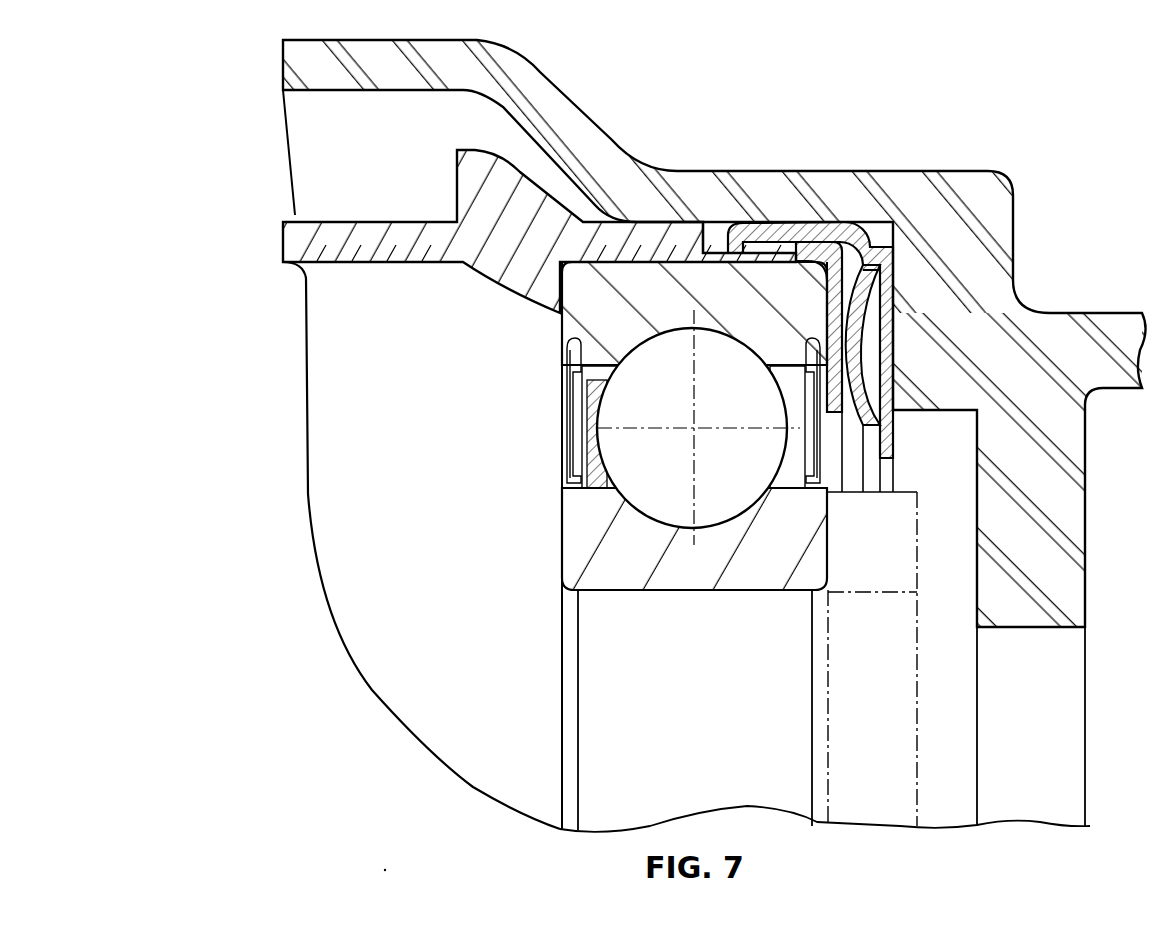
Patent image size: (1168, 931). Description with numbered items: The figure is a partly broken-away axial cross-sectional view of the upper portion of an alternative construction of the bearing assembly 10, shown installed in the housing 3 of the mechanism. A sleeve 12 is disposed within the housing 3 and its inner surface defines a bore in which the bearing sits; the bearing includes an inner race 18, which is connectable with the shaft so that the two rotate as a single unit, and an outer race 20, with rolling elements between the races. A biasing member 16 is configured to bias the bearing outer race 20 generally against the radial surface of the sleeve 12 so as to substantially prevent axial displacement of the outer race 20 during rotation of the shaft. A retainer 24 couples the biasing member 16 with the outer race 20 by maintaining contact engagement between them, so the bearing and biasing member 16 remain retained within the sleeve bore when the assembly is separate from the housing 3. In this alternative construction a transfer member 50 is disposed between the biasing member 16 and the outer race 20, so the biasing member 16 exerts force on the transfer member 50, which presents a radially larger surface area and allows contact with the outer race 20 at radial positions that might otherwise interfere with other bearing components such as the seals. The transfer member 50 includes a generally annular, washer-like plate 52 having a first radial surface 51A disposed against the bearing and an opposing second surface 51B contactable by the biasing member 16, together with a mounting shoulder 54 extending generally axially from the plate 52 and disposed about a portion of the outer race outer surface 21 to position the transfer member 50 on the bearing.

The housing 3 is at (625, 132).
The bearing assembly 10 is at (266, 364).
The sleeve 12 is at (340, 205).
The biasing member 16 is at (737, 423).
The inner race 18 is at (568, 545).
The outer race 20 is at (556, 324).
The outer race outer surface 21 is at (672, 263).
The retainer 24 is at (852, 213).
The transfer member 50 is at (878, 476).
The first radial surface 51A is at (824, 301).
The second surface 51B is at (842, 387).
The plate 52 is at (850, 351).
The mounting shoulder 54 is at (815, 244).